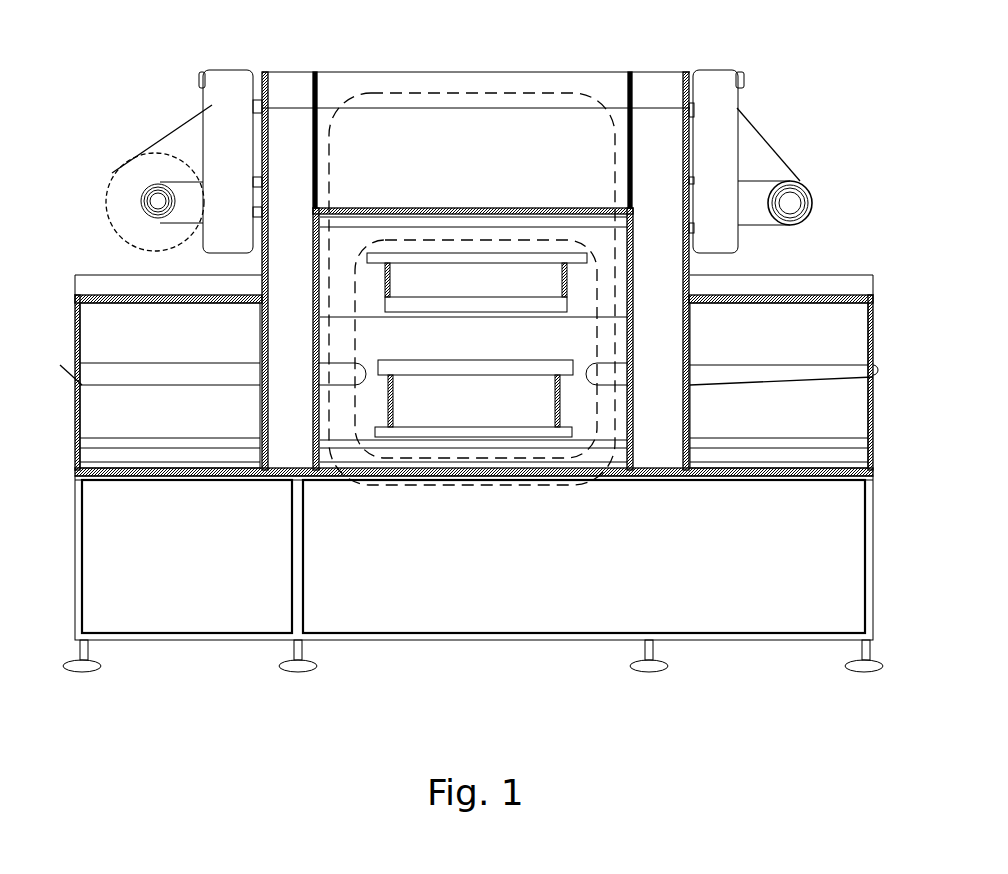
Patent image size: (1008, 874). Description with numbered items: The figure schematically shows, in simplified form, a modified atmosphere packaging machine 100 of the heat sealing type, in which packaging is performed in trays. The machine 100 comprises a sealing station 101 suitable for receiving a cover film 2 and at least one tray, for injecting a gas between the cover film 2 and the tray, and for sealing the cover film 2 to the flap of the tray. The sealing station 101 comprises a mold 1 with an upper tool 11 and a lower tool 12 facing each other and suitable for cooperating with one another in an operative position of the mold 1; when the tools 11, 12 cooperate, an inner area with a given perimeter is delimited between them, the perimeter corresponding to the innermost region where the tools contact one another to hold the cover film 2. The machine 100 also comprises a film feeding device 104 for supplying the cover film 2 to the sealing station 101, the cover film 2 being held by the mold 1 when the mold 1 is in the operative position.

The modified atmosphere packaging machine 100 is at (788, 102).
The mold 1 is at (573, 457).
The cover film 2 is at (178, 125).
The upper tool 11 is at (478, 280).
The lower tool 12 is at (452, 410).
The sealing station 101 is at (480, 484).
The film feeding device 104 is at (158, 205).